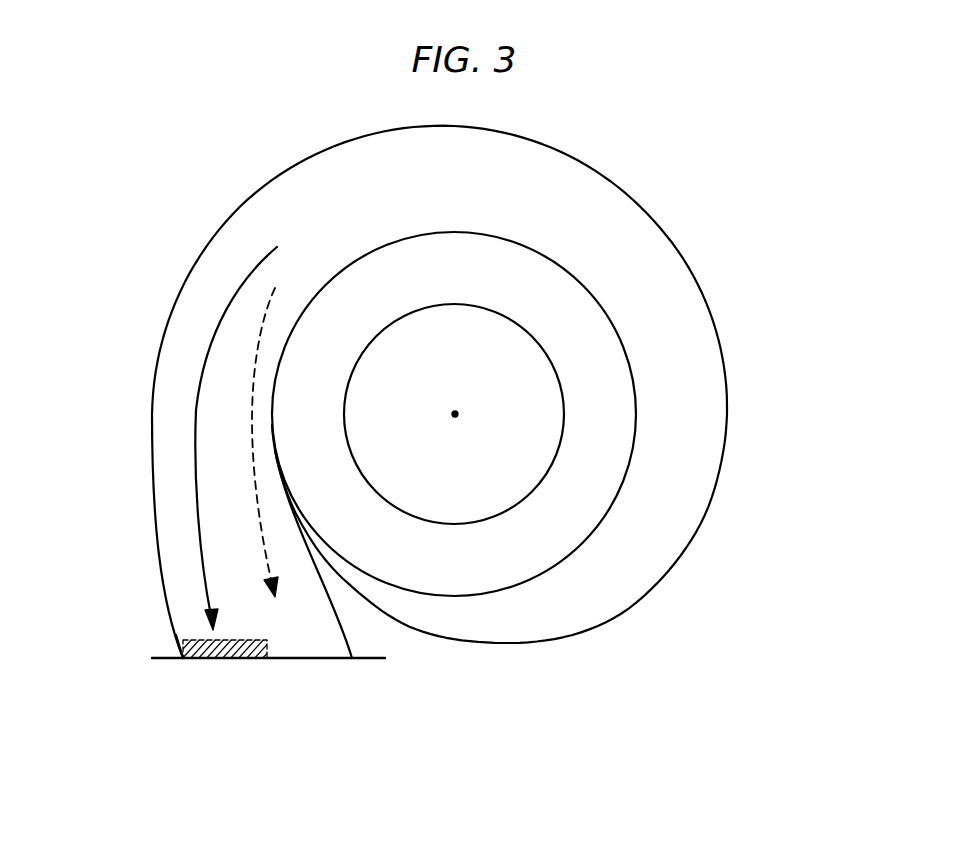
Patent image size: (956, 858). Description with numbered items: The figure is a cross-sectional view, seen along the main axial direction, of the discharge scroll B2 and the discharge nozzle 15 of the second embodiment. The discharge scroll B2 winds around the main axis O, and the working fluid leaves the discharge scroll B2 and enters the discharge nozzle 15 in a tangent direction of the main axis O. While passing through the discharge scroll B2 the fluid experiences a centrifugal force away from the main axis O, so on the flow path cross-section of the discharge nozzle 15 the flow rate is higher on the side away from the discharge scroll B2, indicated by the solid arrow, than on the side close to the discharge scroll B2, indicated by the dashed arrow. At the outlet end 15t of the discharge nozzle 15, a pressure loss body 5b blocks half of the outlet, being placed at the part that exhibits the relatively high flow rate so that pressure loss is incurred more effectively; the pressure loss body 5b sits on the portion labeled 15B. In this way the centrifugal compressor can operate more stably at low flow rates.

The discharge nozzle 15 is at (160, 522).
The outlet end 15t is at (168, 642).
The casing bottom plate 15B is at (385, 659).
The pressure loss body 5b is at (208, 660).
The discharge scroll B2 is at (646, 211).
The main axis O is at (455, 414).